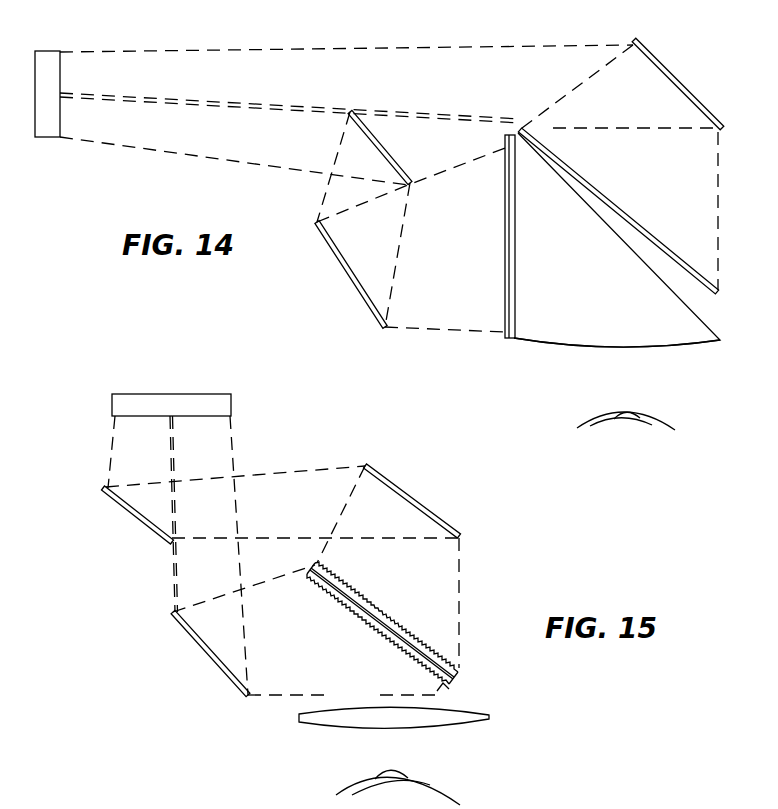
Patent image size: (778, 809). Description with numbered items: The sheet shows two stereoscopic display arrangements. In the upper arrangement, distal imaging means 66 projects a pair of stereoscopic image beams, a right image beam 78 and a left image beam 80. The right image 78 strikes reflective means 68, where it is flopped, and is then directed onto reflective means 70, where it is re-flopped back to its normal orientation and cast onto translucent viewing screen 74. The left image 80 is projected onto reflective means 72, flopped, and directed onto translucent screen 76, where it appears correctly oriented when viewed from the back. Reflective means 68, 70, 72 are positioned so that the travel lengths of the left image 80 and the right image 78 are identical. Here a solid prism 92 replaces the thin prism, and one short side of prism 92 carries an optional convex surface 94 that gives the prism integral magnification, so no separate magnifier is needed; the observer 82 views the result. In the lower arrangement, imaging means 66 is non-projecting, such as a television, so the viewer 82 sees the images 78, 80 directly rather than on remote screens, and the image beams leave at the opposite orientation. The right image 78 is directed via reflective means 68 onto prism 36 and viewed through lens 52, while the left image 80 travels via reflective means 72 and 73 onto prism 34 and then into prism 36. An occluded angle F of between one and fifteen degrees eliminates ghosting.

In FIG. 14, the distal imaging means 66 is at (50, 131).
In FIG. 15, the distal imaging means 66 is at (126, 405).
In FIG. 14, the left image beam 80 is at (133, 70).
In FIG. 15, the left image beam 80 is at (108, 458).
In FIG. 14, the right image beam 78 is at (117, 128).
In FIG. 15, the right image beam 78 is at (213, 447).
In FIG. 14, the reflective means 68 is at (391, 154).
In FIG. 15, the reflective means 68 is at (215, 662).
In FIG. 14, the reflective means 70 is at (347, 270).
In FIG. 14, the reflective means 72 is at (700, 103).
In FIG. 15, the reflective means 72 is at (153, 531).
In FIG. 15, the reflective means 73 is at (418, 503).
In FIG. 14, the translucent viewing screen 74 is at (504, 306).
In FIG. 14, the translucent screen 76 is at (703, 278).
In FIG. 14, the solid prism 92 is at (683, 337).
In FIG. 14, the convex surface 94 is at (566, 345).
In FIG. 14, the observer 82 is at (660, 428).
In FIG. 15, the observer 82 is at (358, 790).
In FIG. 15, the prism 34 is at (424, 640).
In FIG. 15, the prism 36 is at (405, 663).
In FIG. 15, the occluded angle F is at (449, 691).
In FIG. 15, the lens 52 is at (458, 722).